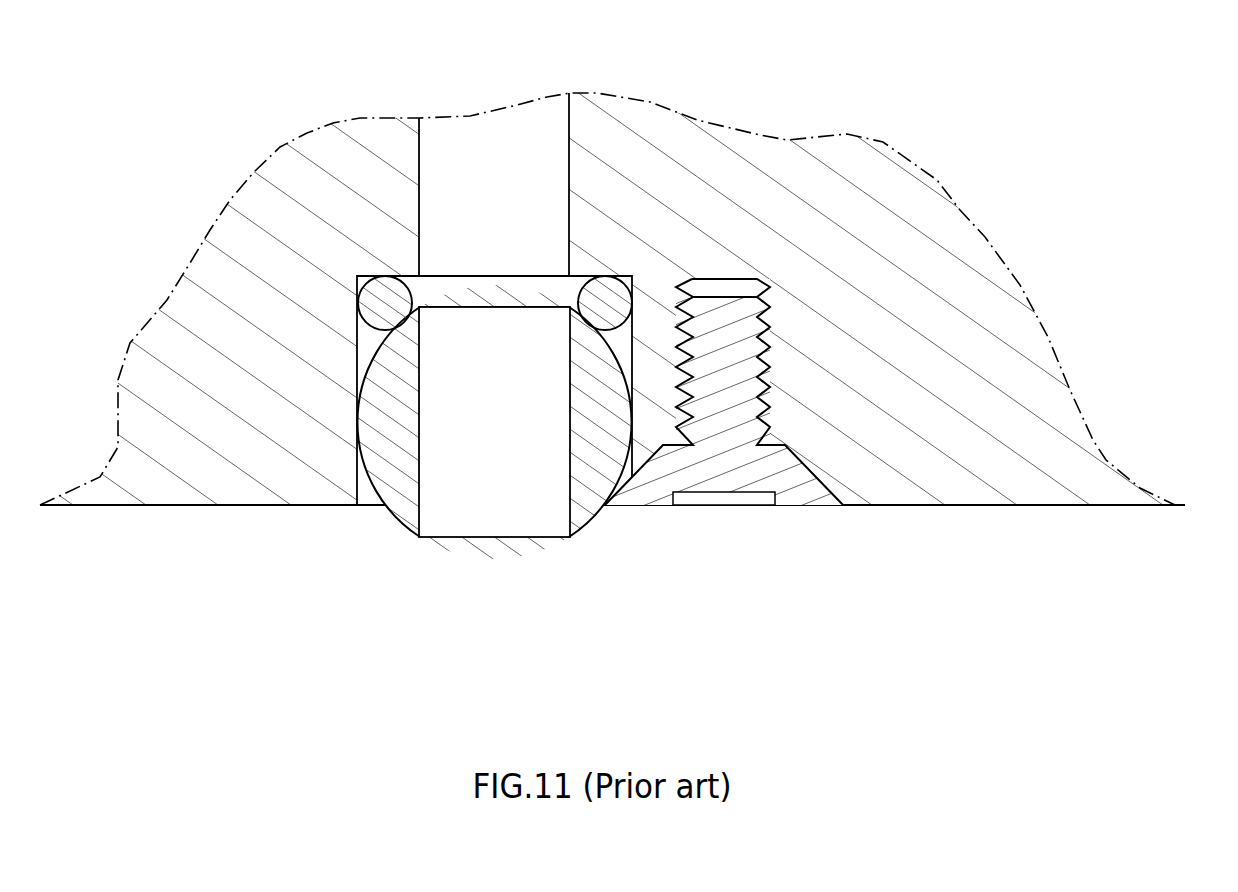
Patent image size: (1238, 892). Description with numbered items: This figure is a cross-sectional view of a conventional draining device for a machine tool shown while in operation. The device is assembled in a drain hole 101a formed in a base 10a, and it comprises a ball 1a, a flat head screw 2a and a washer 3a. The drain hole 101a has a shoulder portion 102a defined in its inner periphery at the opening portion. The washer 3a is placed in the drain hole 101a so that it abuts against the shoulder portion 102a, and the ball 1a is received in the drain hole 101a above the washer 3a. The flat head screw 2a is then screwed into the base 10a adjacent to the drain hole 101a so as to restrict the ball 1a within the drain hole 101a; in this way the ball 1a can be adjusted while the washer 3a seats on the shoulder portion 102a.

The base 10a is at (262, 482).
The shoulder portion 102a is at (410, 280).
The drain hole 101a is at (569, 212).
The washer 3a is at (598, 295).
The ball 1a is at (403, 495).
The flat head screw 2a is at (740, 477).